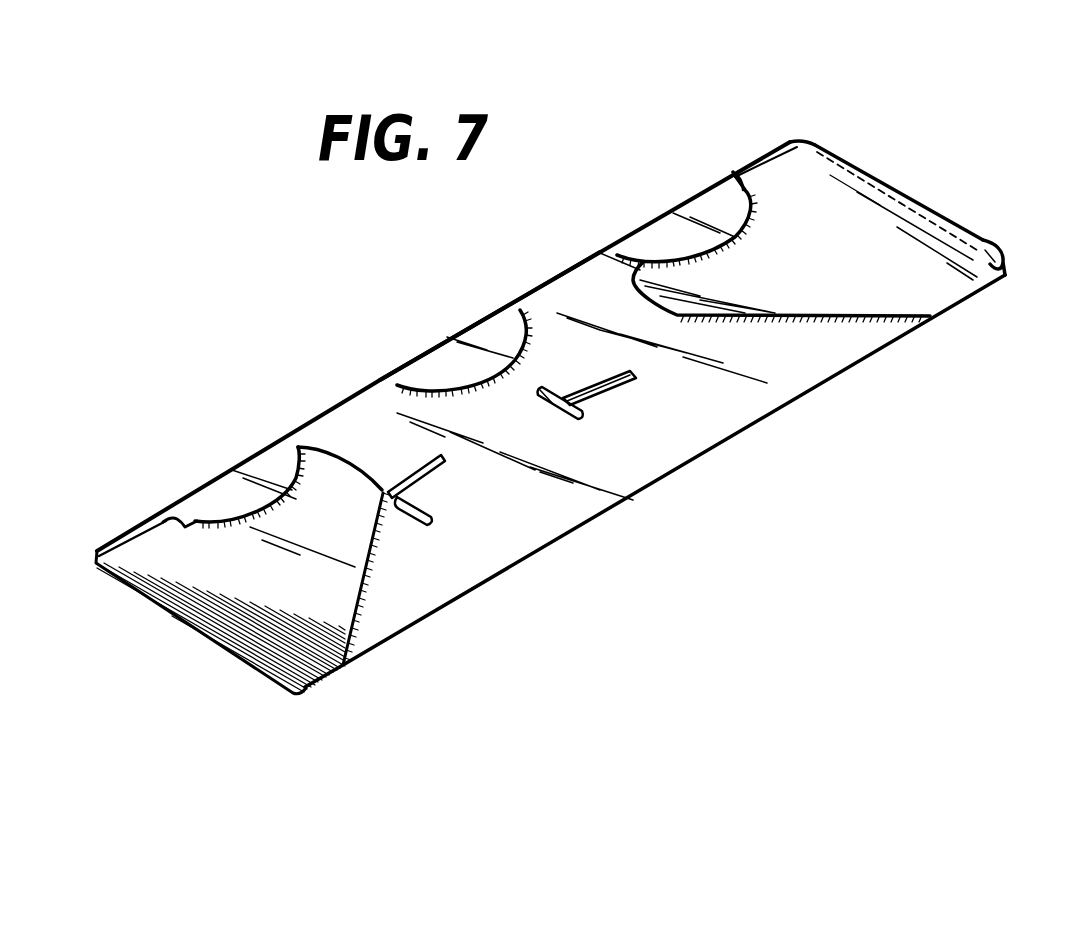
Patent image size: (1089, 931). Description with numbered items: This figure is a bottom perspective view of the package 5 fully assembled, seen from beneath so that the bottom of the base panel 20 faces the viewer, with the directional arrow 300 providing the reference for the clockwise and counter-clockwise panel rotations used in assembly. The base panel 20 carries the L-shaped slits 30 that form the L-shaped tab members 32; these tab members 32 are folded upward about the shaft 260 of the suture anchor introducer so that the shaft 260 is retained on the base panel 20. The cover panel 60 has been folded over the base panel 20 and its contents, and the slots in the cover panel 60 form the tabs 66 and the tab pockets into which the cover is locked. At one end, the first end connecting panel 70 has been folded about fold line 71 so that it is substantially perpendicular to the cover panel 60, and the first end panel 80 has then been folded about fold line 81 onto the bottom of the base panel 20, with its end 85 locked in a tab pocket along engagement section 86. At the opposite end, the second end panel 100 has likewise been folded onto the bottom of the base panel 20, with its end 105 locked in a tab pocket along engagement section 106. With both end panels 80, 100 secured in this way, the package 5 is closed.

The package 5 is at (983, 114).
The base panel 20 is at (570, 503).
The L-shaped slits 30 is at (587, 410).
The L-shaped tab members 32 is at (610, 392).
The cover panel 60 is at (537, 293).
The tabs 66 is at (457, 365).
The first end connecting panel 70 is at (920, 208).
The fold line 71 is at (975, 232).
The first end panel 80 is at (943, 292).
The fold line 81 is at (983, 263).
The end 85 is at (820, 180).
The engagement section 86 is at (748, 207).
The second end panel 100 is at (337, 612).
The end 105 is at (310, 476).
The engagement section 106 is at (186, 524).
The shaft 260 is at (553, 408).
The directional arrow 300 is at (173, 716).